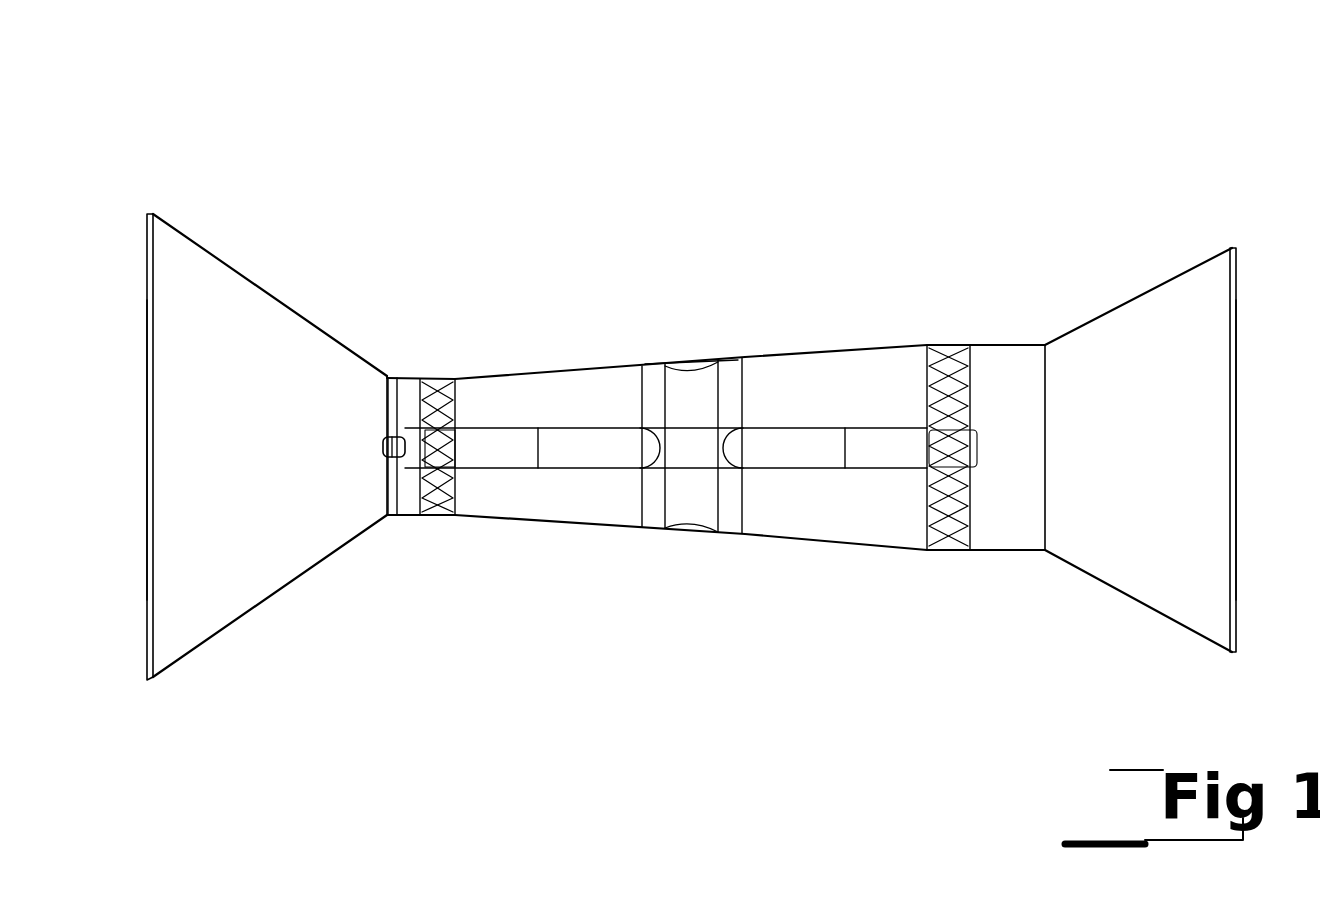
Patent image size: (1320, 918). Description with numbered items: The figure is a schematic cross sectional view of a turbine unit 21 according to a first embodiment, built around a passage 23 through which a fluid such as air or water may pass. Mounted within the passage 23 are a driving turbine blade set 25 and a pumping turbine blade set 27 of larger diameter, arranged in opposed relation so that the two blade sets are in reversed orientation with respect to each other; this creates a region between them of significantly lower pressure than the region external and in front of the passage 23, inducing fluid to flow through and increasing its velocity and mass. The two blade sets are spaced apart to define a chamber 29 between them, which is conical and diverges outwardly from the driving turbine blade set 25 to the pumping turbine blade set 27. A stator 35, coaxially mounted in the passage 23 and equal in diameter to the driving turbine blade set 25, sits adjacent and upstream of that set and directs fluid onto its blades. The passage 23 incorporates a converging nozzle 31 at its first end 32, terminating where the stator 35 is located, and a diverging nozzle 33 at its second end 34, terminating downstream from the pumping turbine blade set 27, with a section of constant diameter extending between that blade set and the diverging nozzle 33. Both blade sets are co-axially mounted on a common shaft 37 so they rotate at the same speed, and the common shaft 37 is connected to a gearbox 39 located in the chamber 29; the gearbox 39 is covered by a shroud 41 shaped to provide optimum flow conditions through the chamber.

The turbine unit 21 is at (420, 128).
The passage 23 is at (268, 538).
The driving turbine blade set 25 is at (444, 500).
The pumping turbine blade set 27 is at (957, 555).
The chamber 29 is at (603, 500).
The converging nozzle 31 is at (290, 352).
The first end 32 is at (148, 490).
The diverging nozzle 33 is at (1182, 318).
The second end 34 is at (1236, 457).
The stator 35 is at (398, 516).
The common shaft 37 is at (808, 460).
The gearbox 39 is at (700, 388).
The shroud 41 is at (675, 382).